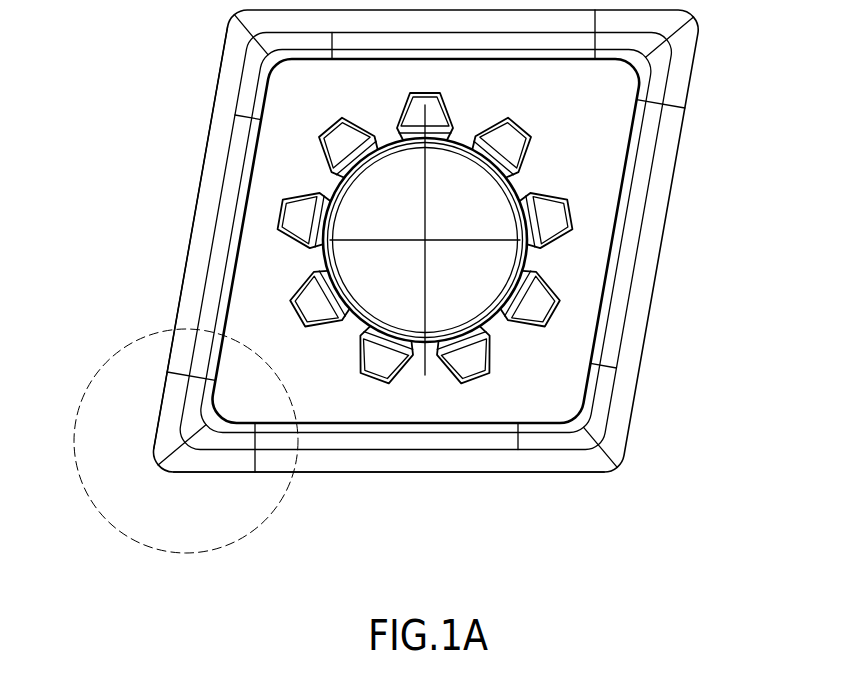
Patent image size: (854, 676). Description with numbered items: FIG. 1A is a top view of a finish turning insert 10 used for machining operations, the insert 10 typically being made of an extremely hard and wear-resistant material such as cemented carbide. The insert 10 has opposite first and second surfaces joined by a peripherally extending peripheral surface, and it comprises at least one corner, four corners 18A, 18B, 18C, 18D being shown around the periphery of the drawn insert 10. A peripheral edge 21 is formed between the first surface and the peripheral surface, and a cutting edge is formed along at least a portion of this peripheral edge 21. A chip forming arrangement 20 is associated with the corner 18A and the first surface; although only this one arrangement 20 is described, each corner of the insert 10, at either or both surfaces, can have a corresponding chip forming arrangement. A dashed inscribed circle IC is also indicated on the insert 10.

The insert 10 is at (170, 82).
The corner 18A is at (265, 498).
The corner 18B is at (192, 108).
The corner 18C is at (703, 82).
The corner 18D is at (647, 403).
The chip forming arrangement 20 is at (280, 472).
The peripheral edge 21 is at (192, 233).
The inscribed circle IC is at (242, 535).